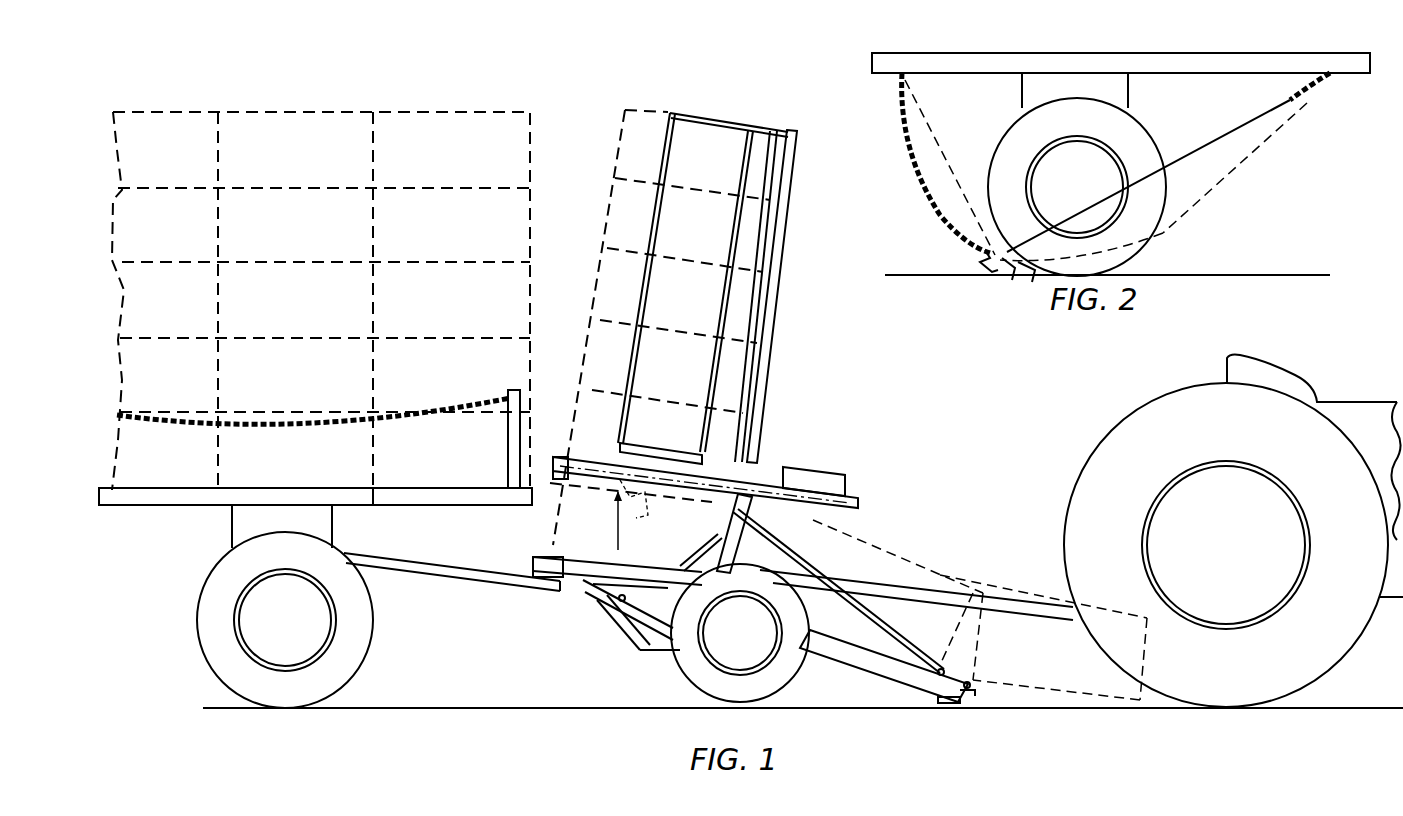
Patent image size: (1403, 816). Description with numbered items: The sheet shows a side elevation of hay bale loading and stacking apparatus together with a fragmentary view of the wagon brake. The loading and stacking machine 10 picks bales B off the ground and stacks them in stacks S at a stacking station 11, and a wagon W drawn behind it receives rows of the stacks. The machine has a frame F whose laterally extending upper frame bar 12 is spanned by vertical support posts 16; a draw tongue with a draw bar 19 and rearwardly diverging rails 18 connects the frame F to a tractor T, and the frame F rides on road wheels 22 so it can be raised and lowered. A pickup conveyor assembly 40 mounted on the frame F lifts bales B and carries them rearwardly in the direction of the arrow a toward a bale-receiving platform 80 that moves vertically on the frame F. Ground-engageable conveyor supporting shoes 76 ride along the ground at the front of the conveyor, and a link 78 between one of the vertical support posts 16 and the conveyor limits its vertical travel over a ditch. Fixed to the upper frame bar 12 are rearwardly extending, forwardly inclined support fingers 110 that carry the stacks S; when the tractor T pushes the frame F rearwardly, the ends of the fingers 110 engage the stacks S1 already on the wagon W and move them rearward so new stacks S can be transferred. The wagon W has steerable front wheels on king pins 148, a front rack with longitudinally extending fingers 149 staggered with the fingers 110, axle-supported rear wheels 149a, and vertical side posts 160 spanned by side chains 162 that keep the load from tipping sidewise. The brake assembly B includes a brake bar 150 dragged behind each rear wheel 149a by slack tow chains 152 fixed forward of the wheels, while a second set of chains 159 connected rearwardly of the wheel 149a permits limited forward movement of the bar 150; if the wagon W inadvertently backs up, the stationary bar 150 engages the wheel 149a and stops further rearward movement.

In FIG. 1, the loading and stacking machine 10 is at (775, 108).
In FIG. 1, the stacking station 11 is at (657, 102).
In FIG. 1, the upper frame bar 12 is at (770, 470).
In FIG. 1, the vertical support posts 16 is at (780, 233).
In FIG. 1, the rearwardly diverging rails 18 is at (894, 582).
In FIG. 1, the draw bar 19 is at (977, 578).
In FIG. 1, the road wheels 22 is at (698, 676).
In FIG. 1, the pickup conveyor assembly 40 is at (888, 683).
In FIG. 1, the conveyor supporting shoes 76 is at (955, 712).
In FIG. 1, the link 78 is at (790, 552).
In FIG. 1, the bale-receiving platform 80 is at (556, 455).
In FIG. 1, the support fingers 110 is at (614, 460).
In FIG. 1, the king pins 148 is at (232, 528).
In FIG. 1, the longitudinally extending fingers 149 is at (218, 660).
In FIG. 2, the rear wheels 149a is at (1128, 140).
In FIG. 2, the brake bar 150 is at (995, 275).
In FIG. 2, the tow chains 152 is at (1305, 100).
In FIG. 2, the second set of chains 159 is at (910, 113).
In FIG. 1, the vertical side posts 160 is at (508, 455).
In FIG. 1, the side chains 162 is at (305, 410).
In FIG. 1, the stacks S is at (620, 148).
In FIG. 1, the stacks on the wagon S1 is at (455, 108).
In FIG. 1, the wagon W is at (160, 512).
In FIG. 1, the tractor T is at (1185, 378).
In FIG. 1, the frame F is at (750, 524).
In FIG. 1, the arrow a is at (1030, 655).
In FIG. 1, the bales / brake assembly B is at (1043, 637).
In FIG. 2, the bales / brake assembly B is at (1193, 180).